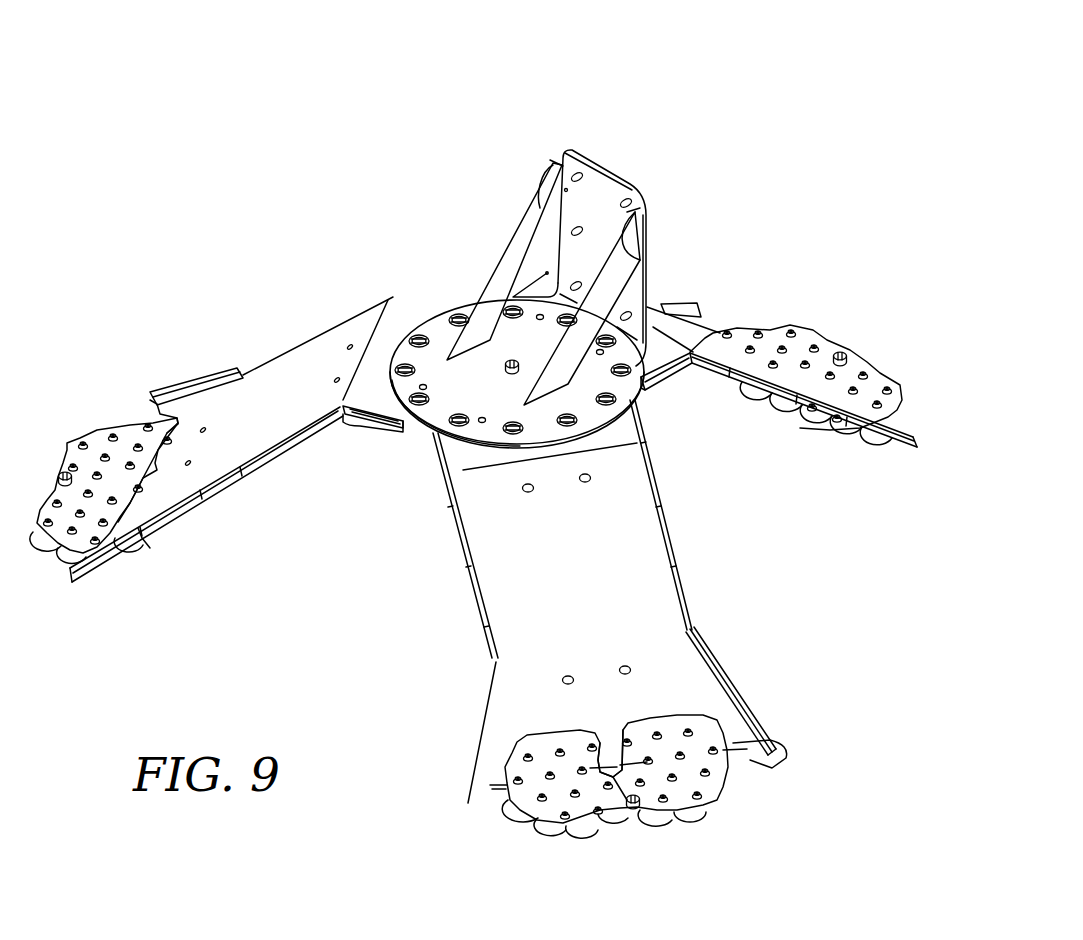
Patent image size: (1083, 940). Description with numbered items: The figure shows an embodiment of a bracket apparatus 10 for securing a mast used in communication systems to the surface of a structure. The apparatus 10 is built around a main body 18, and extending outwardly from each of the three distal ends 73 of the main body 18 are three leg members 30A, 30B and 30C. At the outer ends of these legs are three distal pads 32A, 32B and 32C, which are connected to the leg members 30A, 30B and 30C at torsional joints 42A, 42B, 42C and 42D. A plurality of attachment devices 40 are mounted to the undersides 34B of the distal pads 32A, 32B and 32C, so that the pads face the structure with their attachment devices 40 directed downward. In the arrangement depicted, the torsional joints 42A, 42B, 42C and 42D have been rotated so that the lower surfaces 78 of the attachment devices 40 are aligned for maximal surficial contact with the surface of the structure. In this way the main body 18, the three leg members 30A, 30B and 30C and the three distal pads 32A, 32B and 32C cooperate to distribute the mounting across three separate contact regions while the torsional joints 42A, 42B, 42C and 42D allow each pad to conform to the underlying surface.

The bracket apparatus 10 is at (714, 96).
The main body 18 is at (443, 405).
The leg member 30A is at (473, 803).
The leg member 30B is at (607, 727).
The leg member 30C is at (757, 753).
The distal pad 32A is at (43, 537).
The distal pad 32B is at (647, 817).
The distal pad 32C is at (853, 363).
The underside 34B is at (150, 543).
The attachment device 40 is at (143, 553).
The torsional joint 42A is at (500, 787).
The torsional joint 42B is at (613, 813).
The torsional joint 42C is at (683, 807).
The torsional joint 42D is at (723, 750).
The distal end 73 is at (167, 410).
The lower surface 78 is at (870, 443).